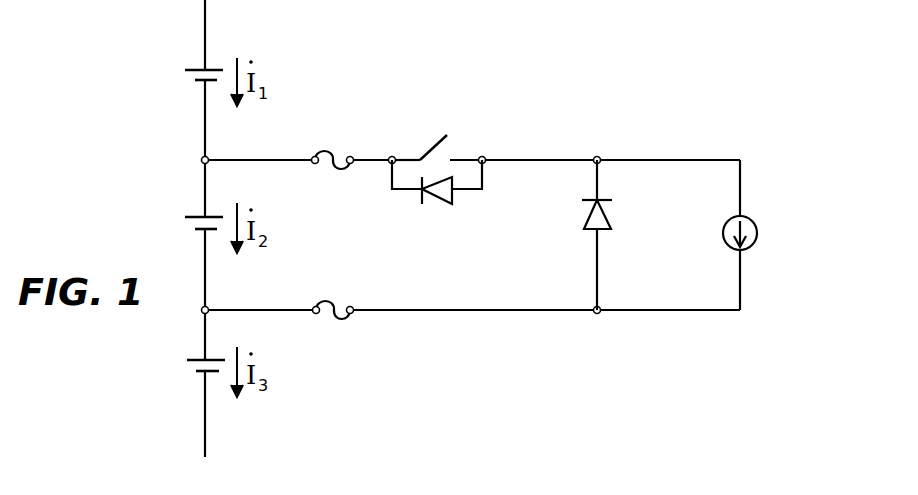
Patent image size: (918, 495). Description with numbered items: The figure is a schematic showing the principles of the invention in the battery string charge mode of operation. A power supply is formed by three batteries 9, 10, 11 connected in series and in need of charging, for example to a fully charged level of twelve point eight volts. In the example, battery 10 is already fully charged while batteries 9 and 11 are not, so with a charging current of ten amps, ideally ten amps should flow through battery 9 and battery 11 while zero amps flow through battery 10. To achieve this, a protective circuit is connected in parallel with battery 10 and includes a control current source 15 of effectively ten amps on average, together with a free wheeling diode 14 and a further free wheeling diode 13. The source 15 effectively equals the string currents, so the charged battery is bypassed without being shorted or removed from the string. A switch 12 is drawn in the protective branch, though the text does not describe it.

The battery 9 is at (191, 68).
The battery 10 is at (192, 215).
The battery 11 is at (194, 358).
The switch 12 is at (448, 148).
The free wheeling diode 13 is at (436, 200).
The free wheeling diode 14 is at (586, 215).
The control current source 15 is at (757, 228).